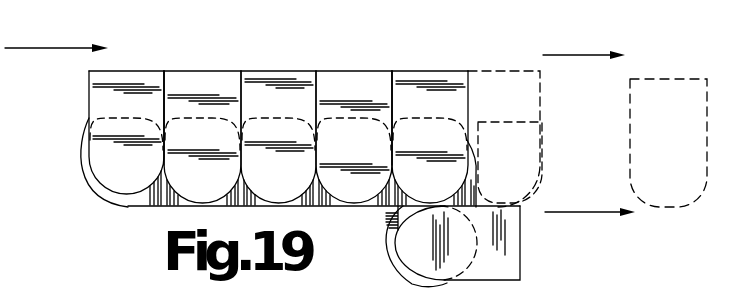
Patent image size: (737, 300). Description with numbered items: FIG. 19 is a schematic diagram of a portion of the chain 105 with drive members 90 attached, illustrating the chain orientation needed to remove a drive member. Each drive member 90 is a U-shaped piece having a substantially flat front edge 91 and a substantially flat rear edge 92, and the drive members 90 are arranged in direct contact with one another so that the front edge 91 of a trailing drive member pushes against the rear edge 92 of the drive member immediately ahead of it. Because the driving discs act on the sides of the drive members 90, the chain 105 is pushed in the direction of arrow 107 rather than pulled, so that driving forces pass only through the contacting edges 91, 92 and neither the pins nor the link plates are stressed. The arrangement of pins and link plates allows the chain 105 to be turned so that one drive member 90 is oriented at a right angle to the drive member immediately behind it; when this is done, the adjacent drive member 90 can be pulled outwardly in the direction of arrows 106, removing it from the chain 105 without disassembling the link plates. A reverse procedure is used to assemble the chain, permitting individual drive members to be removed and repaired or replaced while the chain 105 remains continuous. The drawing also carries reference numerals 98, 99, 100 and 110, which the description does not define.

The drive member 90 is at (279, 78).
The front edge 91 is at (168, 90).
The rear edge 92 is at (157, 78).
The bottom wall 98 is at (128, 197).
The web between cups 99 is at (302, 198).
The base 100 is at (360, 207).
The chain 105 is at (450, 55).
The arrows 106 is at (578, 52).
The arrow 107 is at (46, 47).
The conveyor 110 is at (655, 297).